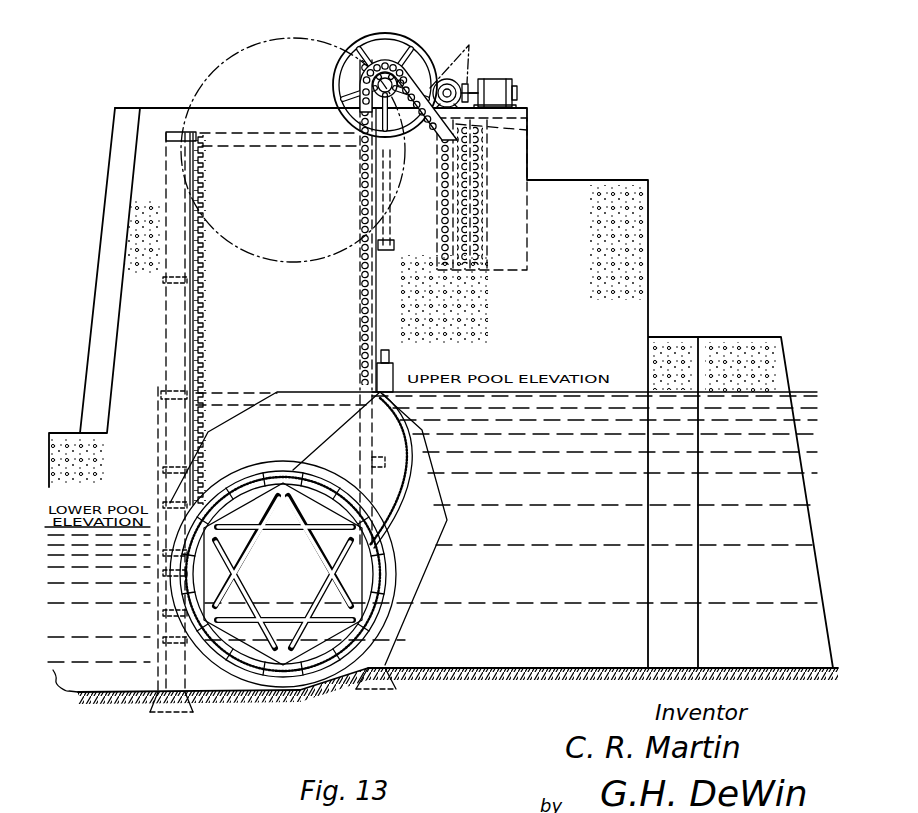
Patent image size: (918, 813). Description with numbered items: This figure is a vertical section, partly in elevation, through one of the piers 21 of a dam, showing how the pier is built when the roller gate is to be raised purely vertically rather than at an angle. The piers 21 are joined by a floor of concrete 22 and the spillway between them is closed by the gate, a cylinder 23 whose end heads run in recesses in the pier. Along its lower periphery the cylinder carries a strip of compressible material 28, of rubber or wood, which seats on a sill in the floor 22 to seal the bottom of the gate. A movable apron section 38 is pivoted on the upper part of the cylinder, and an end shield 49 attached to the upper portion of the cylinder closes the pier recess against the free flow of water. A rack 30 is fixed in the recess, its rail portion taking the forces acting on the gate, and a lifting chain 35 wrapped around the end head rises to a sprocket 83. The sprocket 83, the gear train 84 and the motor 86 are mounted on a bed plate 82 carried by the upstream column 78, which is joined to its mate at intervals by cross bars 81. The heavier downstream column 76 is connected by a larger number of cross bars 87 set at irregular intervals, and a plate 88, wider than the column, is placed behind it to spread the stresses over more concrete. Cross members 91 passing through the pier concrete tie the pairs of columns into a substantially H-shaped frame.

The piers 21 is at (605, 181).
The floor of concrete 22 is at (424, 668).
The cylinder 23 is at (275, 471).
The strip of compressible material 28 is at (362, 690).
The rack 30 is at (199, 139).
The lifting chain 35 is at (366, 178).
The movable apron section 38 is at (400, 505).
The end shield 49 is at (432, 470).
The column 76 is at (168, 187).
The column 78 is at (378, 145).
The cross bars 81 is at (392, 244).
The bed plate 82 is at (400, 110).
The sprocket 83 is at (385, 85).
The gear train 84 is at (420, 50).
The motor 86 is at (500, 79).
The cross bars 87 is at (163, 280).
The plate 88 is at (161, 395).
The cross members 91 is at (266, 145).